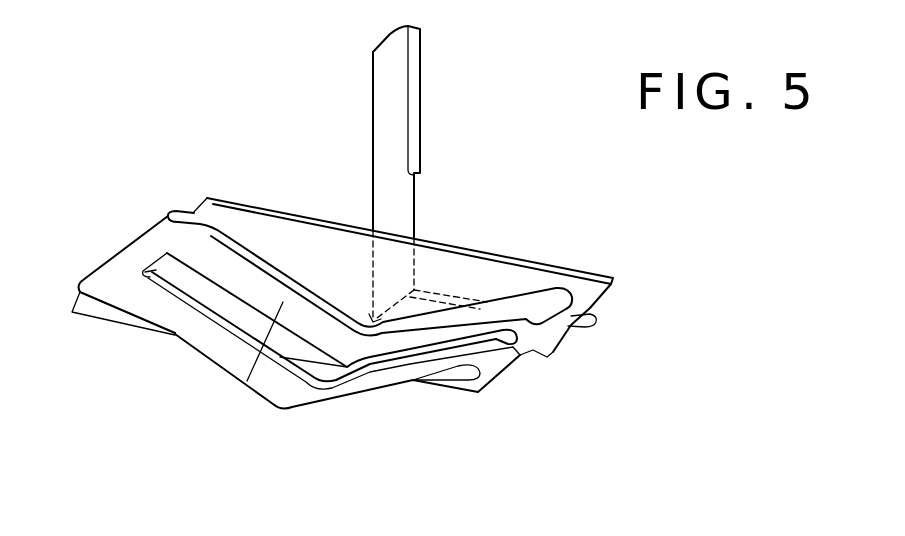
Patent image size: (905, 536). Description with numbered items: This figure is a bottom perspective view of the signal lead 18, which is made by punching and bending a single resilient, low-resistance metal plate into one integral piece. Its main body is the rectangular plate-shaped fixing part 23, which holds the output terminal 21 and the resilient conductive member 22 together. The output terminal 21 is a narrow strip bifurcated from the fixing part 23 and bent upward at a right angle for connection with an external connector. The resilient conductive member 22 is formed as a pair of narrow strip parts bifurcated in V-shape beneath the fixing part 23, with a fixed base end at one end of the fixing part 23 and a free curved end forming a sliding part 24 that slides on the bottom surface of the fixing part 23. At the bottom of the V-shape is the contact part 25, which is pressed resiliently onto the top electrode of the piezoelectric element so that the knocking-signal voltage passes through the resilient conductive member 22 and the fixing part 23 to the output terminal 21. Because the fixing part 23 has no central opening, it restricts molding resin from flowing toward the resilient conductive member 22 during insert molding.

The signal lead 18 is at (466, 216).
The output terminal 21 is at (421, 125).
The resilient conductive member 22 is at (217, 338).
The fixing part 23 is at (298, 213).
The sliding part 24 is at (535, 307).
The contact part 25 is at (335, 348).